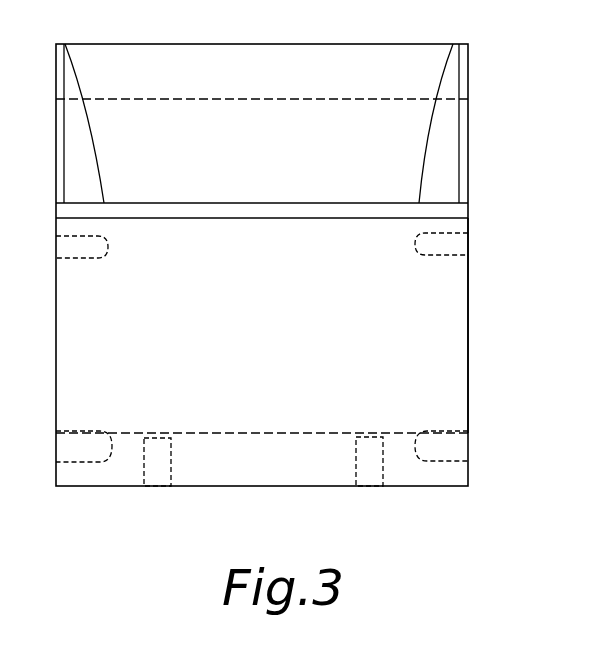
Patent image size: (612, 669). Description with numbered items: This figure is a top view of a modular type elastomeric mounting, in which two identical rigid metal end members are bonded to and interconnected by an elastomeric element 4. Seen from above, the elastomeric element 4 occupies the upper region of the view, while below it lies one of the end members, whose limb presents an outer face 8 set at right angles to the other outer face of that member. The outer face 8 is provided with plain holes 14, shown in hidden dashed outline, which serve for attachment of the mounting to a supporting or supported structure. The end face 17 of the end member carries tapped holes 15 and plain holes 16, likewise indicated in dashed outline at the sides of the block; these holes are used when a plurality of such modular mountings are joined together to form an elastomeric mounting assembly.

The elastomeric element 4 is at (312, 117).
The outer face 8 is at (450, 373).
The plain holes 14 is at (158, 474).
The tapped holes 15 is at (455, 446).
The plain holes 16 is at (455, 243).
The end face 17 is at (469, 308).